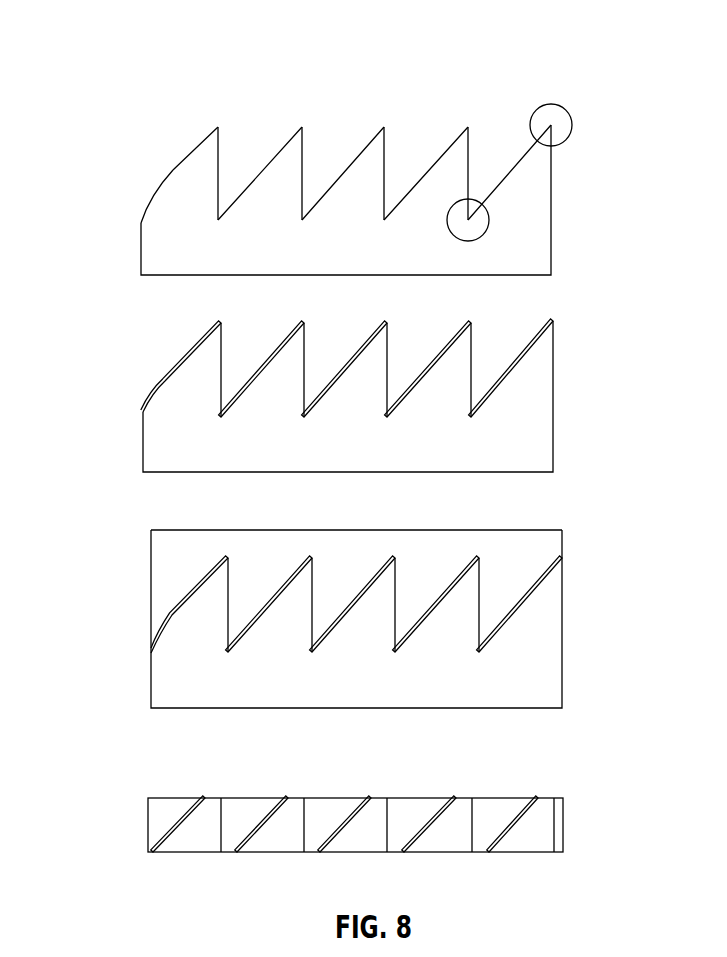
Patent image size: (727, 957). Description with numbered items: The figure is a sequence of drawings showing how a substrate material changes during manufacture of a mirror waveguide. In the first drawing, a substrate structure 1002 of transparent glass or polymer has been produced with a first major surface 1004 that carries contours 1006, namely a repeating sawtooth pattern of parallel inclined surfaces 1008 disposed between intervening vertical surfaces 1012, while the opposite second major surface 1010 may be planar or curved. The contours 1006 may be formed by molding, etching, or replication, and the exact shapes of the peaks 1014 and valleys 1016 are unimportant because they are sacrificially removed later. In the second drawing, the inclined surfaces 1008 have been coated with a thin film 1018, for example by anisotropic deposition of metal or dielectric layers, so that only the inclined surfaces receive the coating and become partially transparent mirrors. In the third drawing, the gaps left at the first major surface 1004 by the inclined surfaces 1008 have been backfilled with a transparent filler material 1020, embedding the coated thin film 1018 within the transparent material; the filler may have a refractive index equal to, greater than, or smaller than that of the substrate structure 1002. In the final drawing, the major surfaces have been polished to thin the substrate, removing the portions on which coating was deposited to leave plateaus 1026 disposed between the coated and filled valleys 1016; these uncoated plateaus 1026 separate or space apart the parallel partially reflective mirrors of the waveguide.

The substrate structure 1002 is at (525, 213).
The first major surface 1004 is at (428, 40).
The contours 1006 is at (322, 42).
The inclined surfaces 1008 is at (302, 127).
The second major surface 1010 is at (140, 252).
The vertical surfaces 1012 is at (220, 147).
The peaks 1014 is at (564, 112).
The valleys 1016 is at (488, 223).
The thin film 1018 is at (192, 347).
The transparent filler material 1020 is at (552, 538).
The plateaus 1026 is at (299, 797).